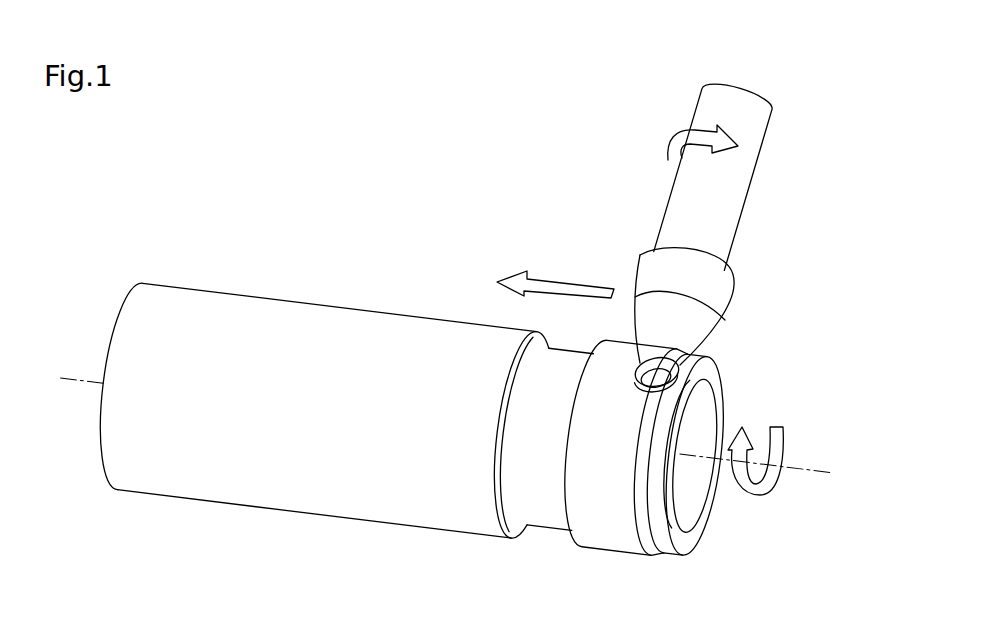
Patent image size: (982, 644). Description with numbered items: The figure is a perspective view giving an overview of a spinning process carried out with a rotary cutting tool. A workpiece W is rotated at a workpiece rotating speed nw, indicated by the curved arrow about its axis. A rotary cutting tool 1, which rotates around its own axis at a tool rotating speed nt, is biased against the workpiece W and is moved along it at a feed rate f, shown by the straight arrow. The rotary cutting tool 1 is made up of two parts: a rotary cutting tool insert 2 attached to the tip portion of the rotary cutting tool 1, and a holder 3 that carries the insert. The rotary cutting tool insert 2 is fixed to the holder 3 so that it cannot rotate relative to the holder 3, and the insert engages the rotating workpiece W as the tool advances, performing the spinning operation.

The workpiece W is at (218, 312).
The rotary cutting tool 1 is at (722, 235).
The rotary cutting tool insert 2 is at (676, 364).
The holder 3 is at (716, 291).
The feed rate f is at (548, 284).
The tool rotating speed nt is at (688, 142).
The workpiece rotating speed nw is at (757, 472).